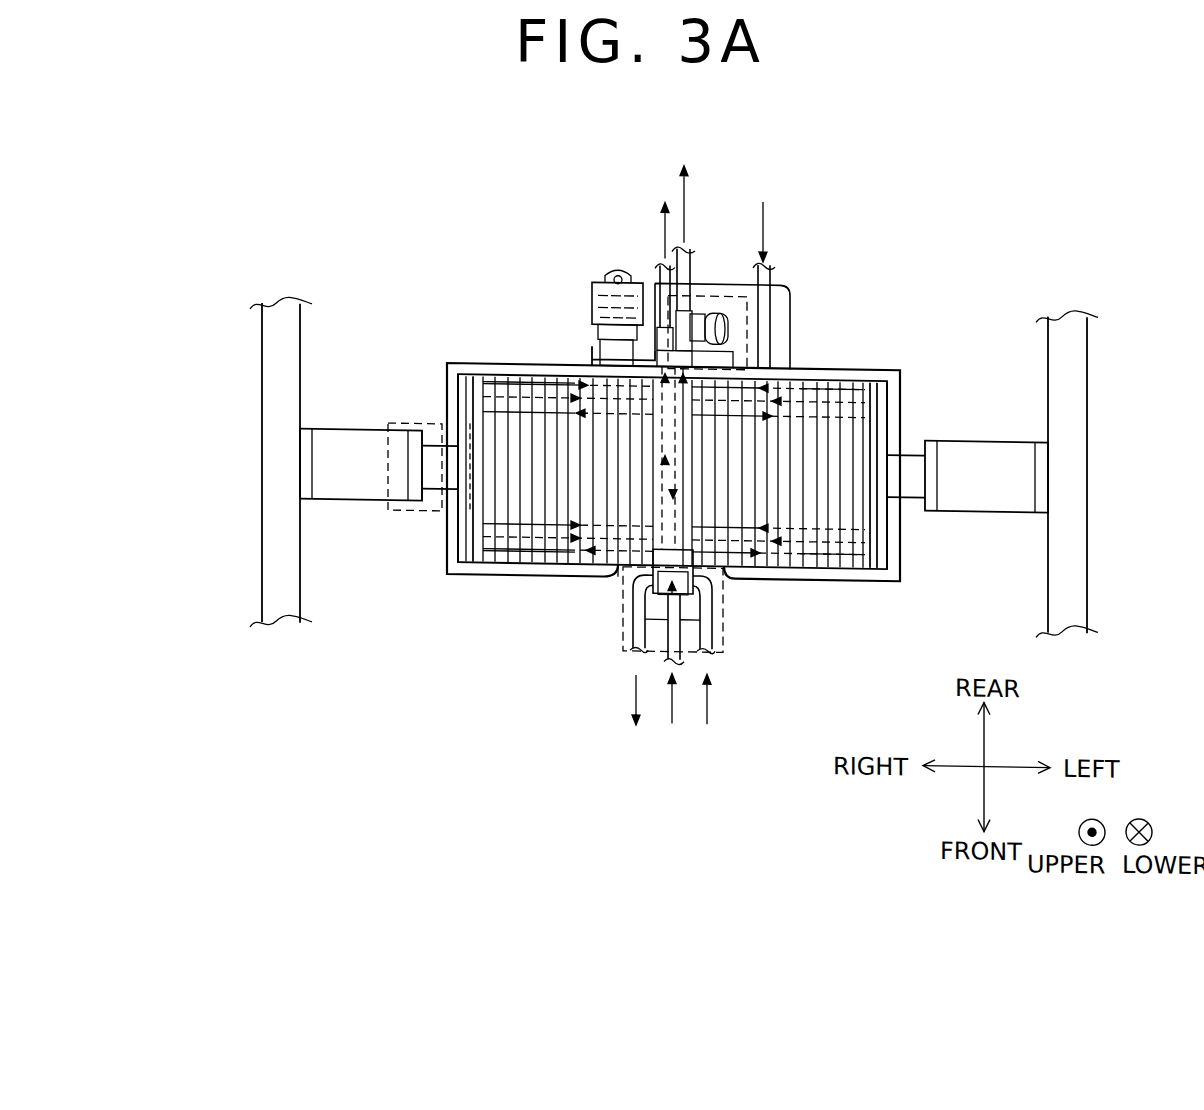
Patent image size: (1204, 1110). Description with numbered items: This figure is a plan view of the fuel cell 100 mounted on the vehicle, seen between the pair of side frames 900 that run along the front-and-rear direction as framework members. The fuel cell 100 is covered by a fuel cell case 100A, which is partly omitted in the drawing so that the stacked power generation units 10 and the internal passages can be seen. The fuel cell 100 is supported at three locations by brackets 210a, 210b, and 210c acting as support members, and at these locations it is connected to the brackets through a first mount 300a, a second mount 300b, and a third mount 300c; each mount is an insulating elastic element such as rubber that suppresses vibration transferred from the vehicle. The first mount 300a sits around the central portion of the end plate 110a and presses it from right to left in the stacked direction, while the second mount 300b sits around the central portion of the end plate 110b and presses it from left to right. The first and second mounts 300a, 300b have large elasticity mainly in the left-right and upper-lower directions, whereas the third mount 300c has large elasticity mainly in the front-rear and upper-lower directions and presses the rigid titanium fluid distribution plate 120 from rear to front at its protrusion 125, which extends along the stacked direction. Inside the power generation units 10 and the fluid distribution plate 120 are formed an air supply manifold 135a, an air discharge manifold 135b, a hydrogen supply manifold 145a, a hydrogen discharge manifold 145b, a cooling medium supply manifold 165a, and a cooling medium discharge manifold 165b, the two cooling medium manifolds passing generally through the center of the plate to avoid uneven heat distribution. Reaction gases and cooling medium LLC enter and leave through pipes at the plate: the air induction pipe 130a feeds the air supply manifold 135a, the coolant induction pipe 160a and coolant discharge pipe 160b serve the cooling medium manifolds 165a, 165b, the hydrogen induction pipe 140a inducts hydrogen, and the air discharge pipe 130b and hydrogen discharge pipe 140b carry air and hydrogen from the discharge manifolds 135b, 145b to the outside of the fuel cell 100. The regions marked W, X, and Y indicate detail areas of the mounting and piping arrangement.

The power generation unit 10 is at (880, 438).
The fuel cell 100 is at (498, 374).
The fuel cell case 100A is at (458, 362).
The end plate 110a is at (460, 394).
The end plate 110b is at (882, 553).
The fluid distribution plate 120 is at (733, 576).
The protrusion 125 is at (596, 363).
The air induction pipe 130a is at (682, 658).
The air discharge pipe 130b is at (727, 236).
The air supply manifold 135a is at (603, 576).
The air discharge manifold 135b is at (843, 395).
The hydrogen induction pipe 140a is at (772, 268).
The hydrogen discharge pipe 140b is at (658, 262).
The hydrogen supply manifold 145a is at (500, 576).
The hydrogen discharge manifold 145b is at (880, 400).
The coolant induction pipe 160a is at (723, 632).
The coolant discharge pipe 160b is at (623, 640).
The cooling medium supply manifold 165a is at (543, 576).
The cooling medium discharge manifold 165b is at (880, 360).
The bracket 210a is at (368, 493).
The bracket 210b is at (972, 495).
The bracket 210c is at (593, 287).
The first mount 300a is at (435, 483).
The second mount 300b is at (912, 486).
The third mount 300c is at (600, 340).
The side frame 900 is at (265, 578).
The region W is at (422, 418).
The region X is at (622, 674).
The region Y is at (792, 330).